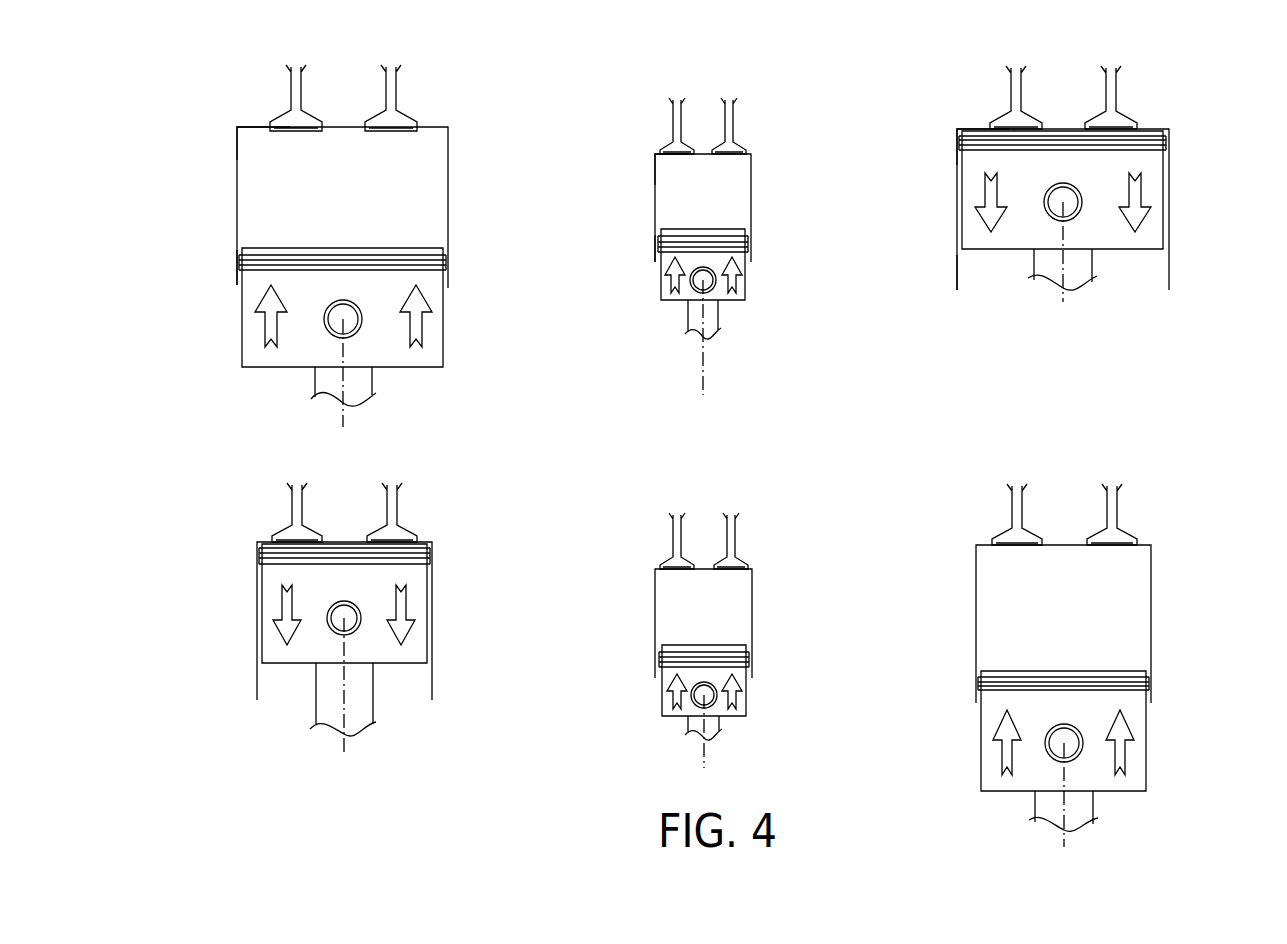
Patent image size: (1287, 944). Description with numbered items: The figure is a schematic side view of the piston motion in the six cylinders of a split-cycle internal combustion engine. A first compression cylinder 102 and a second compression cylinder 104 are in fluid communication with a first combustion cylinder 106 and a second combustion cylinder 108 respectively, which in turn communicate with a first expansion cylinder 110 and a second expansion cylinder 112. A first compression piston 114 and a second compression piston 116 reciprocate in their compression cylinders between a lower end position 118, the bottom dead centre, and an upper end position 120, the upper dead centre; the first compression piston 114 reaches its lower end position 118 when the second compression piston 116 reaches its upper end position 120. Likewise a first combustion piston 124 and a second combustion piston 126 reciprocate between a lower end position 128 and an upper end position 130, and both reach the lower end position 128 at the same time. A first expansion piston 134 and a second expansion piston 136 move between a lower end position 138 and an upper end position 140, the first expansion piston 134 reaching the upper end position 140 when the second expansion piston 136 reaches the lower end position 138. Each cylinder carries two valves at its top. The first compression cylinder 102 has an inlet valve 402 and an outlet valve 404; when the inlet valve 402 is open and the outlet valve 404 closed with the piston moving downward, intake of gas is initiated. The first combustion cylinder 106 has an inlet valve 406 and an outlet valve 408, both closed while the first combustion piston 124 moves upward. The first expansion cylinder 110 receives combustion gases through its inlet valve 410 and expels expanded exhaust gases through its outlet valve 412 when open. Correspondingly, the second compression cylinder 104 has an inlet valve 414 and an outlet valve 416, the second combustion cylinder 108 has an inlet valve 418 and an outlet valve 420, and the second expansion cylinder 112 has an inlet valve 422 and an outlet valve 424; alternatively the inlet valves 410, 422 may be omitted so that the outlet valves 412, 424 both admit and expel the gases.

The first compression cylinder 102 is at (448, 180).
The second compression cylinder 104 is at (432, 578).
The first combustion cylinder 106 is at (751, 175).
The second combustion cylinder 108 is at (752, 592).
The first expansion cylinder 110 is at (1169, 185).
The second expansion cylinder 112 is at (1151, 600).
The first compression piston 114 is at (433, 327).
The second compression piston 116 is at (383, 652).
The lower end position 118 is at (237, 281).
The upper end position 120 is at (237, 133).
The first combustion piston 124 is at (745, 280).
The second combustion piston 126 is at (746, 697).
The lower end position 128 is at (655, 257).
The upper end position 130 is at (655, 160).
The first expansion piston 134 is at (1153, 222).
The second expansion piston 136 is at (1135, 760).
The lower end position 138 is at (957, 281).
The upper end position 140 is at (957, 135).
The inlet valve 402 is at (291, 93).
The outlet valve 404 is at (397, 93).
The inlet valve 406 is at (673, 122).
The outlet valve 408 is at (733, 122).
The inlet valve 410 is at (1011, 95).
The outlet valve 412 is at (1117, 95).
The inlet valve 414 is at (292, 505).
The outlet valve 416 is at (398, 505).
The inlet valve 418 is at (673, 537).
The outlet valve 420 is at (735, 537).
The inlet valve 422 is at (1012, 505).
The outlet valve 424 is at (1117, 505).